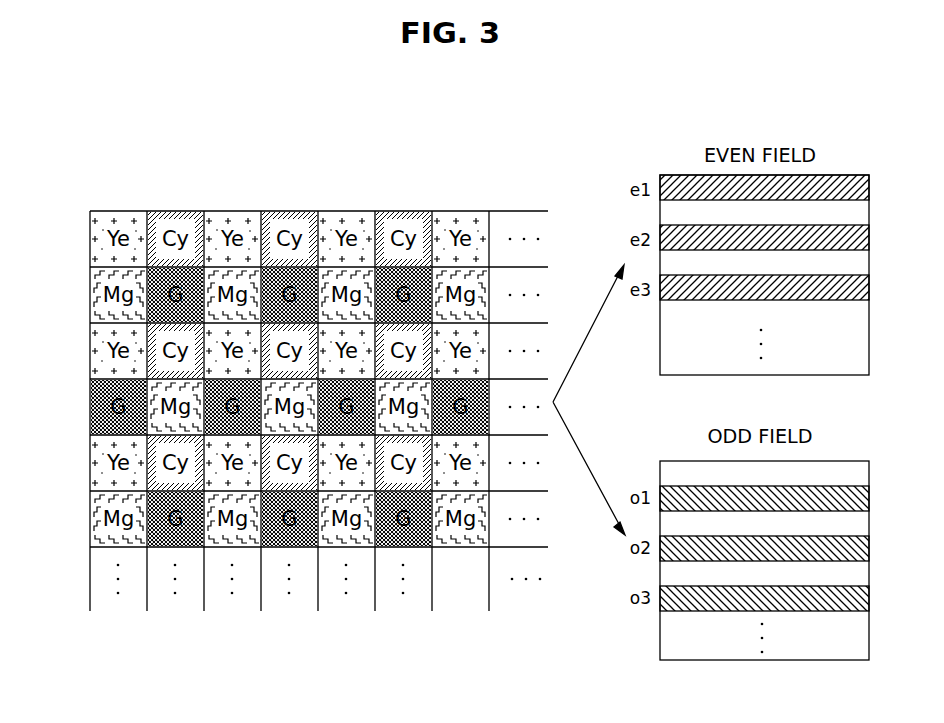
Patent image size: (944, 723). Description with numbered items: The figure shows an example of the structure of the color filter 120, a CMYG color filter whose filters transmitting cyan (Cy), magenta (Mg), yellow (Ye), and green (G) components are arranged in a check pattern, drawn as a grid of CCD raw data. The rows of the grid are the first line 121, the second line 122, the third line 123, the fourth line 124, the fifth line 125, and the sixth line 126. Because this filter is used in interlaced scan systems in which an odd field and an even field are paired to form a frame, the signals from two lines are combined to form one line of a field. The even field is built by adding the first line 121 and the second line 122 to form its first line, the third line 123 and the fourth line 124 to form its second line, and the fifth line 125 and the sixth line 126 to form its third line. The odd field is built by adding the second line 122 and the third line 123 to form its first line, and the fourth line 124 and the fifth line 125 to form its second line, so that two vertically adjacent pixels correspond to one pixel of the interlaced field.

The color filter 120 is at (487, 178).
The first line 121 is at (92, 239).
The second line 122 is at (92, 295).
The third line 123 is at (92, 351).
The fourth line 124 is at (92, 407).
The fifth line 125 is at (92, 463).
The sixth line 126 is at (92, 519).